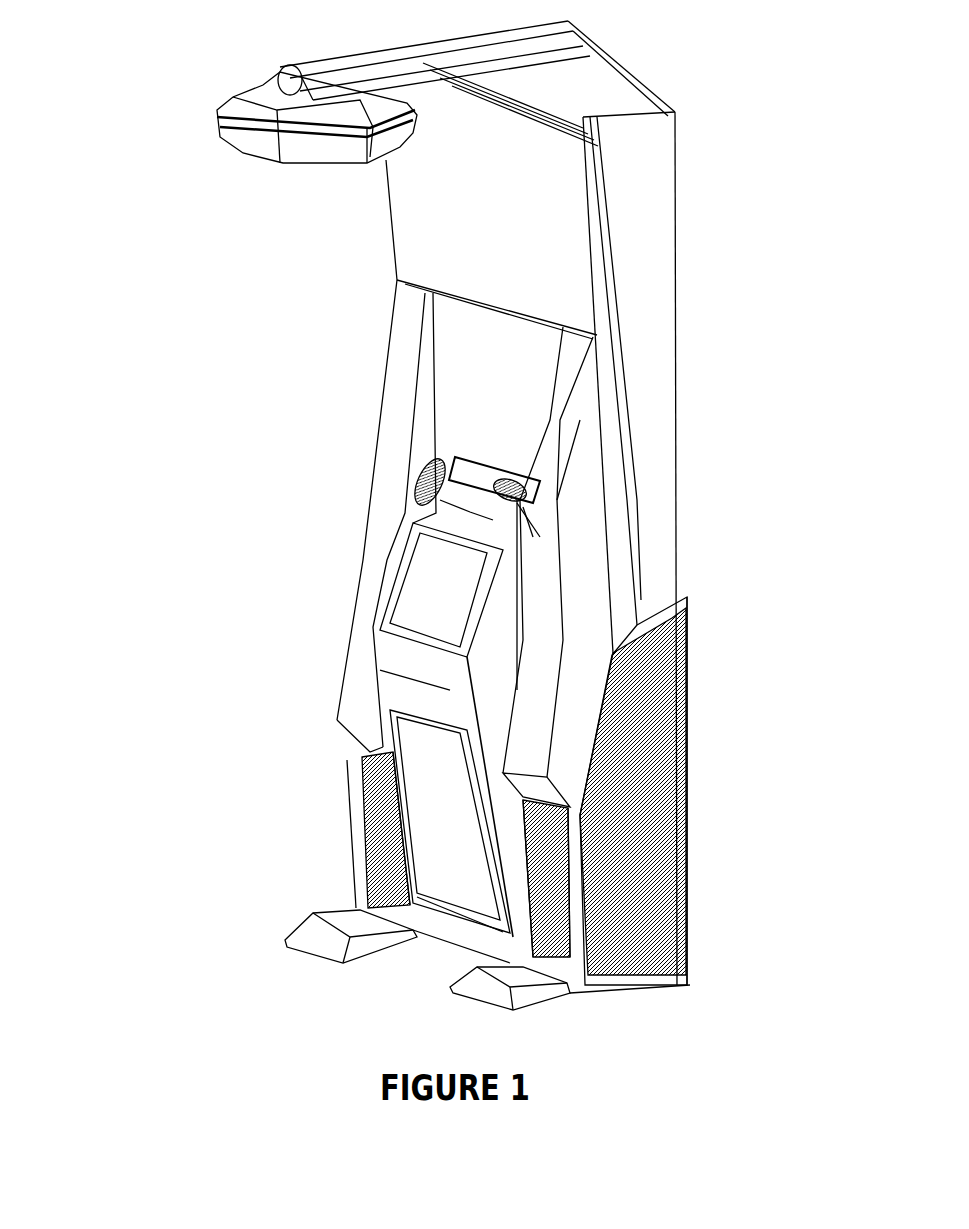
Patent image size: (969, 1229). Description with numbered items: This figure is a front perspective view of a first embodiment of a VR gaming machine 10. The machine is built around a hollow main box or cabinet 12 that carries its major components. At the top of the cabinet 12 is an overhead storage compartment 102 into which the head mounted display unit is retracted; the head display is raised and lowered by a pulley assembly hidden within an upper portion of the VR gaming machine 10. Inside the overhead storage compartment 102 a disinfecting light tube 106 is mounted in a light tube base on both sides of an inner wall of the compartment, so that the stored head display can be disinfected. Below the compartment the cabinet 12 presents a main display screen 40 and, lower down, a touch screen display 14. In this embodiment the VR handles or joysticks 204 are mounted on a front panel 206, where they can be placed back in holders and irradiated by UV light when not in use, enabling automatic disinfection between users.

The VR gaming machine 10 is at (688, 697).
The main box or cabinet 12 is at (676, 380).
The touch screen display 14 is at (463, 578).
The main display screen 40 is at (462, 218).
The overhead storage compartment 102 is at (240, 118).
The disinfecting light tube 106 is at (490, 468).
The joysticks 204 is at (517, 502).
The front panel 206 is at (470, 512).